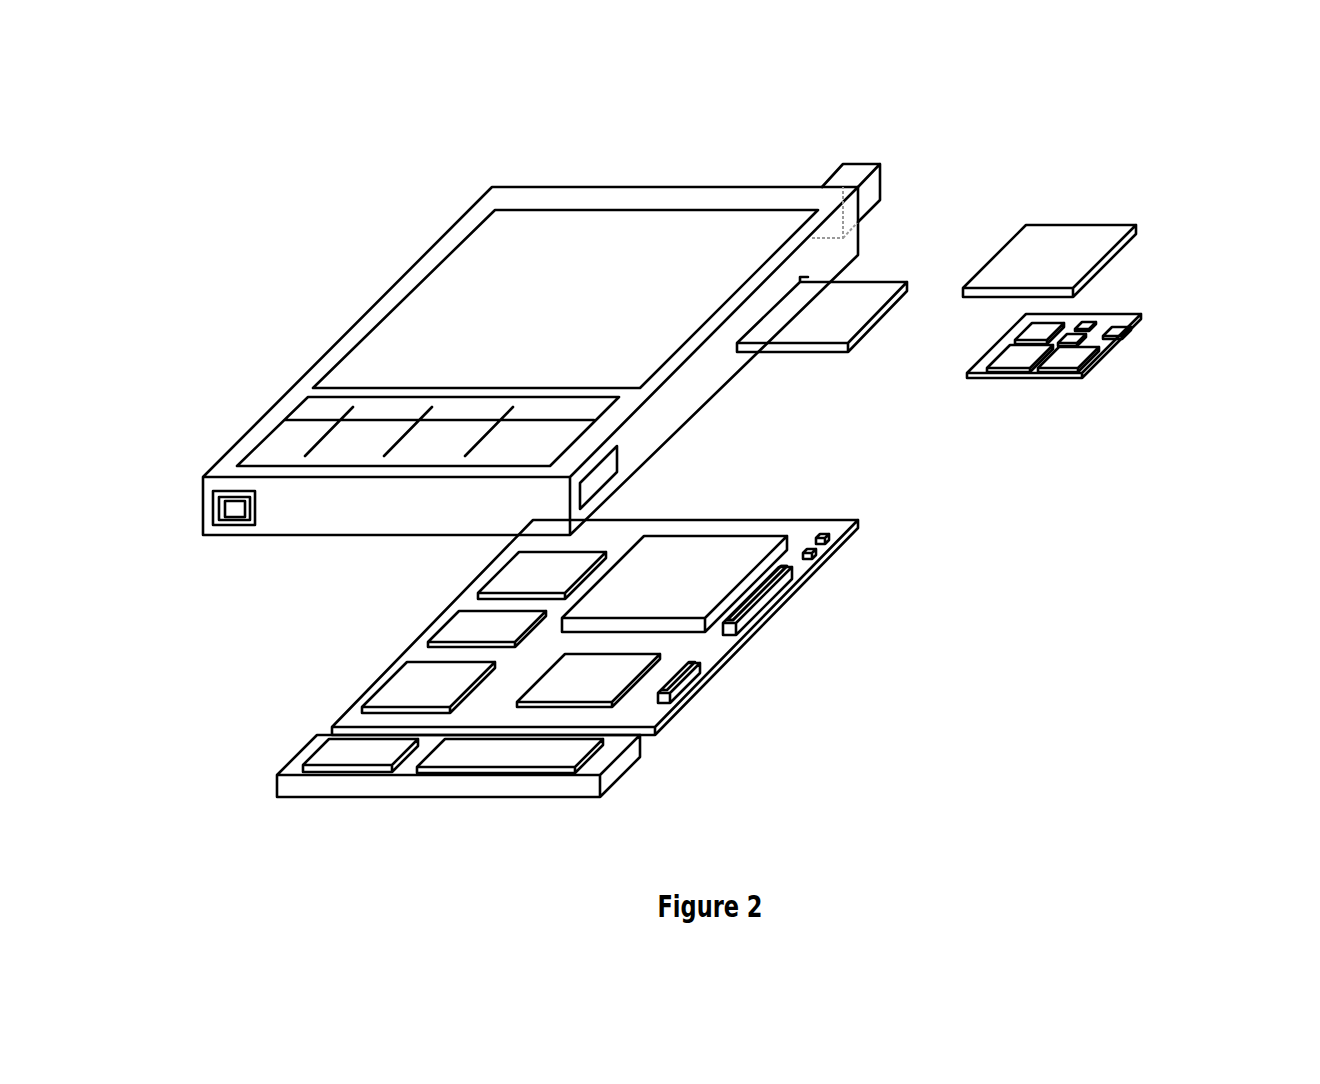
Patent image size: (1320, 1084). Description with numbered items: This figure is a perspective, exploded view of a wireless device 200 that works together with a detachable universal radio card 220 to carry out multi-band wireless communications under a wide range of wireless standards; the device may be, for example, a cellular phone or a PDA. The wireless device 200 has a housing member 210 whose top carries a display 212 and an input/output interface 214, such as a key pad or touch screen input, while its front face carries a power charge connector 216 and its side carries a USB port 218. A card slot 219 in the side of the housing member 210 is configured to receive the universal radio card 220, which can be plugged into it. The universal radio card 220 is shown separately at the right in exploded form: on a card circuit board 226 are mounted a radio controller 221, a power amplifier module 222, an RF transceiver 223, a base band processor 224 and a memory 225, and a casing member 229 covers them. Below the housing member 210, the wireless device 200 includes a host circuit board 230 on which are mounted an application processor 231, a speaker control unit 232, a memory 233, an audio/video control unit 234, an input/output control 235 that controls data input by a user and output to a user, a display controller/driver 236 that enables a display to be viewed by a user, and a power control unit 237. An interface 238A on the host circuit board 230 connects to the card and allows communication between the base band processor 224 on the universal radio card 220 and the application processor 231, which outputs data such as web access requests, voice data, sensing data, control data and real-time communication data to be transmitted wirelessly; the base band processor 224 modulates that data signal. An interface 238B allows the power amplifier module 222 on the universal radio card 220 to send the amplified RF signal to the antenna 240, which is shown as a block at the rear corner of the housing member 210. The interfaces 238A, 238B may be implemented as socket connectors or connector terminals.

The wireless device 200 is at (551, 363).
The housing member 210 is at (350, 512).
The display 212 is at (462, 287).
The input/output interface 214 is at (297, 404).
The power charge connector 216 is at (237, 506).
The USB port 218 is at (603, 473).
The card slot 219 is at (775, 393).
The universal radio card 220 is at (811, 349).
The radio controller 221 is at (1030, 329).
The power amplifier module 222 is at (1015, 360).
The RF transceiver 223 is at (1086, 353).
The base band processor 224 is at (1155, 319).
The memory 225 is at (1096, 313).
The card circuit board 226 is at (1068, 384).
The casing member 229 is at (1087, 240).
The host circuit board 230 is at (808, 520).
The application processor 231 is at (657, 588).
The speaker control unit 232 is at (518, 585).
The memory 233 is at (468, 638).
The audio/video control unit 234 is at (407, 696).
The input/output control 235 is at (565, 688).
The display controller/driver 236 is at (335, 765).
The power control unit 237 is at (493, 765).
The interface 238A is at (760, 603).
The interface 238B is at (757, 593).
The antenna 240 is at (855, 170).